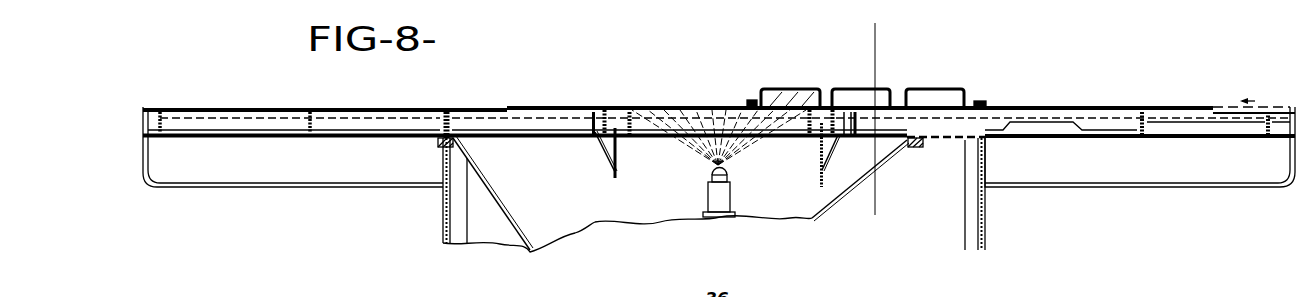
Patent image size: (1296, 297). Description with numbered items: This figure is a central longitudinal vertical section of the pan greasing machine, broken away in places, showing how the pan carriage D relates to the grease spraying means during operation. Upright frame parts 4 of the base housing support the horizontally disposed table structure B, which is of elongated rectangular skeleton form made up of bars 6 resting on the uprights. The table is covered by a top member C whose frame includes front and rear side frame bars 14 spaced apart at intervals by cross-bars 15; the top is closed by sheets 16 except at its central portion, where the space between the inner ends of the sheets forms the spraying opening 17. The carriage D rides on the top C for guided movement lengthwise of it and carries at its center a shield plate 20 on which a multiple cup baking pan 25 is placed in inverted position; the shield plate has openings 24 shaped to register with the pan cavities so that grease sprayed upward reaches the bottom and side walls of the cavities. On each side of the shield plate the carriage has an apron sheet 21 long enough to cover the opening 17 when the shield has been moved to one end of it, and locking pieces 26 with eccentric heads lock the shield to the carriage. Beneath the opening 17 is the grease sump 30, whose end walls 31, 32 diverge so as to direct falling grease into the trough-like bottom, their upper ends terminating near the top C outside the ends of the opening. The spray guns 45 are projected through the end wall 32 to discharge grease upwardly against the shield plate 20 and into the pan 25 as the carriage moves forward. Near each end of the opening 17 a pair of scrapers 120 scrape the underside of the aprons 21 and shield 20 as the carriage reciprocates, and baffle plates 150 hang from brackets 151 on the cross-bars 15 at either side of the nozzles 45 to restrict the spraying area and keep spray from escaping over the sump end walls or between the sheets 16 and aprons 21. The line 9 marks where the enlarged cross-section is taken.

The frame parts 4 is at (452, 203).
The bars 6 is at (205, 138).
The section line 9— 9 is at (858, 23).
The side frame bars 14 is at (1222, 131).
The cross-bars 15 is at (440, 140).
The sheets 16 is at (247, 107).
The opening 17 is at (663, 107).
The shield plate 20 is at (755, 100).
The apron sheet 21 is at (557, 107).
The openings 24 is at (848, 108).
The baking pan 25 is at (930, 65).
The locking pieces 26 is at (983, 100).
The grease sump 30 is at (660, 215).
The end wall 31 is at (563, 237).
The end wall 32 is at (824, 206).
The spray guns 45 is at (731, 196).
The scrapers 120 is at (632, 140).
The baffle plates 150 is at (617, 168).
The brackets 151 is at (607, 158).
The table structure B is at (1187, 190).
The top member C is at (360, 106).
The carriage D is at (1003, 101).